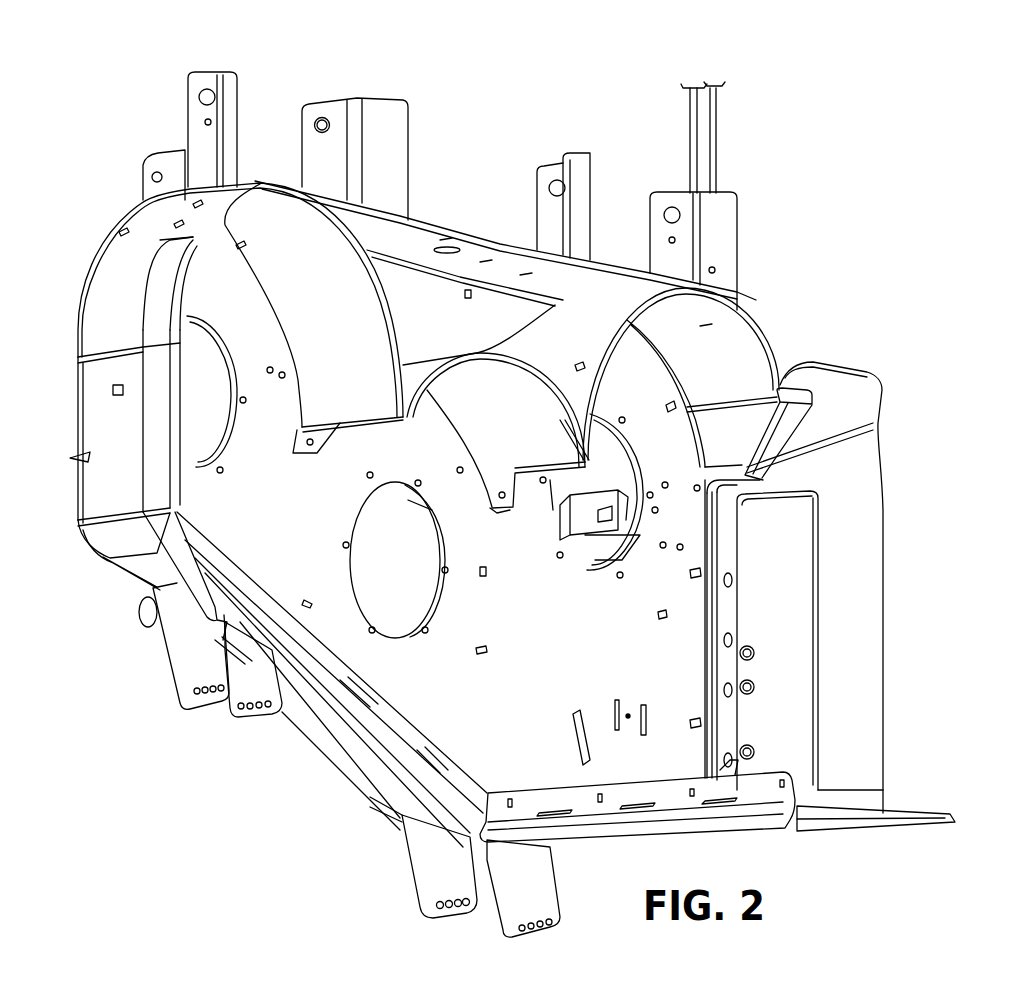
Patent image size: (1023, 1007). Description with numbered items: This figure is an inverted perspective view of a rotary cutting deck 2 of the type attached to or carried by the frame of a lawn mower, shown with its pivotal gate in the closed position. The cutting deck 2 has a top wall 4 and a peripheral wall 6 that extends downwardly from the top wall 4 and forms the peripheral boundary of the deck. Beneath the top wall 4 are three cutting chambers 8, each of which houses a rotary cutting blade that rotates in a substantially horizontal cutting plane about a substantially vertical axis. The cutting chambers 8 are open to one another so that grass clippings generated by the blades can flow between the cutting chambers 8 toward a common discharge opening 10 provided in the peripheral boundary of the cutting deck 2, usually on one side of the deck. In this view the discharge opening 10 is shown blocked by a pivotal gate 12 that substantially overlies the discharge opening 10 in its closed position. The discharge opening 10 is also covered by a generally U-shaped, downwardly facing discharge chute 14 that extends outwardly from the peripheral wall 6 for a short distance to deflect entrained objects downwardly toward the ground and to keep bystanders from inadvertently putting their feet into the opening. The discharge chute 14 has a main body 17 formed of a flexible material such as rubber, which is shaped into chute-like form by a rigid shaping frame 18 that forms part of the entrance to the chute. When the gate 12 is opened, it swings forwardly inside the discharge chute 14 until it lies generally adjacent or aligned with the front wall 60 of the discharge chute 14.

The rotary cutting deck 2 is at (456, 178).
The top wall 4 is at (403, 672).
The peripheral wall 6 is at (486, 258).
The cutting chamber 8 is at (262, 285).
The discharge opening 10 is at (743, 468).
The pivotal gate 12 is at (823, 578).
The discharge chute 14 is at (862, 483).
The main body 17 is at (857, 670).
The rigid shaping frame 18 is at (722, 603).
The front wall 60 is at (890, 820).